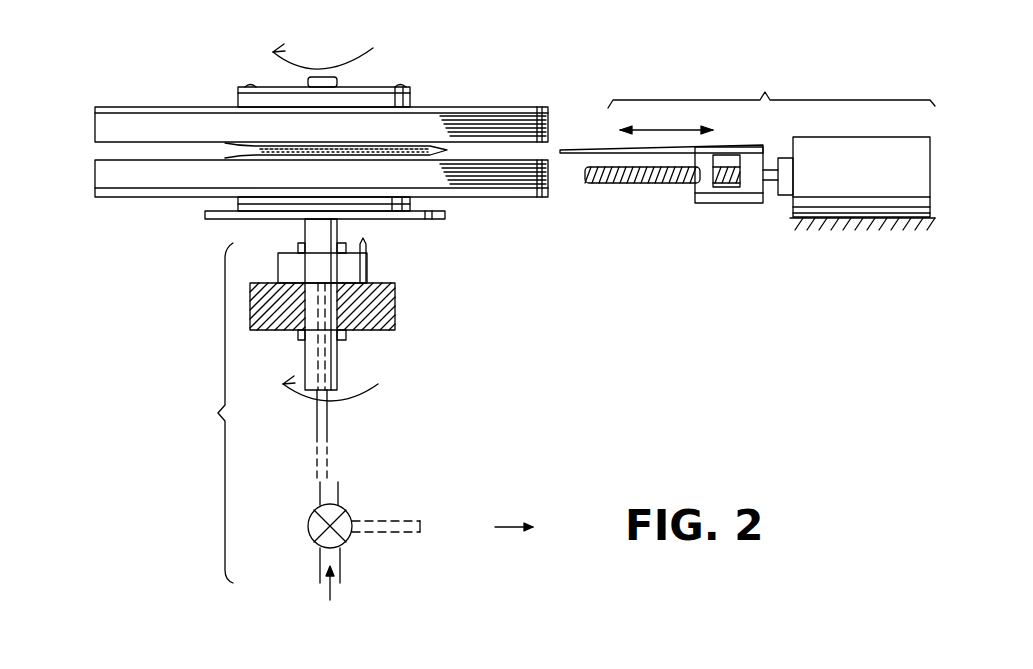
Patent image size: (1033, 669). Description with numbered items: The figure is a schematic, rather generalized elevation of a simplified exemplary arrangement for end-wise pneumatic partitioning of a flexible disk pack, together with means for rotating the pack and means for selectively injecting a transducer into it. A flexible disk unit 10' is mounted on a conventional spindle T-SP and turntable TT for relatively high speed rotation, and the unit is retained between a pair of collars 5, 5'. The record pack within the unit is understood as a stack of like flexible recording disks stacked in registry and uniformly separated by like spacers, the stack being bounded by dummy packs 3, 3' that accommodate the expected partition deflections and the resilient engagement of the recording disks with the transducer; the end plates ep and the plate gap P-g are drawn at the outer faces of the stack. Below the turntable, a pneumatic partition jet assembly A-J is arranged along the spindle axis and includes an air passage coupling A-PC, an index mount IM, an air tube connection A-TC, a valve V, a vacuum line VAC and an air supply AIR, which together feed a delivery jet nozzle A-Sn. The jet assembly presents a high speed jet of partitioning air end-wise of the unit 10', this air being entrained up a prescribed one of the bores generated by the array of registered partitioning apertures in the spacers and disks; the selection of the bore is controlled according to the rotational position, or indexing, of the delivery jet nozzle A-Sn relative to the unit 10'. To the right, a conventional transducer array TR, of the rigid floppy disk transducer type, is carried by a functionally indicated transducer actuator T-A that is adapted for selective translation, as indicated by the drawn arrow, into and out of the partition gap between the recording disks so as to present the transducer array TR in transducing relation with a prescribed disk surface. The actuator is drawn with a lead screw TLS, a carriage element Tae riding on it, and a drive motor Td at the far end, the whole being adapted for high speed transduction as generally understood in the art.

The flexible disk unit 10' is at (137, 69).
The end plate ep is at (105, 107).
The plate gap P-g is at (110, 152).
The dummy pack 3 is at (488, 103).
The dummy pack 3' is at (493, 202).
The collar 5 is at (305, 80).
The collar 5' is at (287, 229).
The turntable TT is at (447, 216).
The spindle T-SP is at (340, 87).
The air passage coupling A-PC is at (370, 272).
The delivery jet nozzle A-Sn is at (368, 250).
The index motor / mount IM is at (395, 313).
The air tube connection A-TC is at (330, 432).
The valve V is at (310, 534).
The vacuum line VAC is at (442, 529).
The air supply AIR is at (327, 589).
The pneumatic partition jet assembly A-J is at (196, 413).
The transducer array TR is at (575, 150).
The transducer array T-A is at (771, 99).
The transducer lead screw TLS is at (652, 183).
The transducer actuator element / carriage Tae is at (722, 203).
The transducer drive motor Td is at (858, 195).